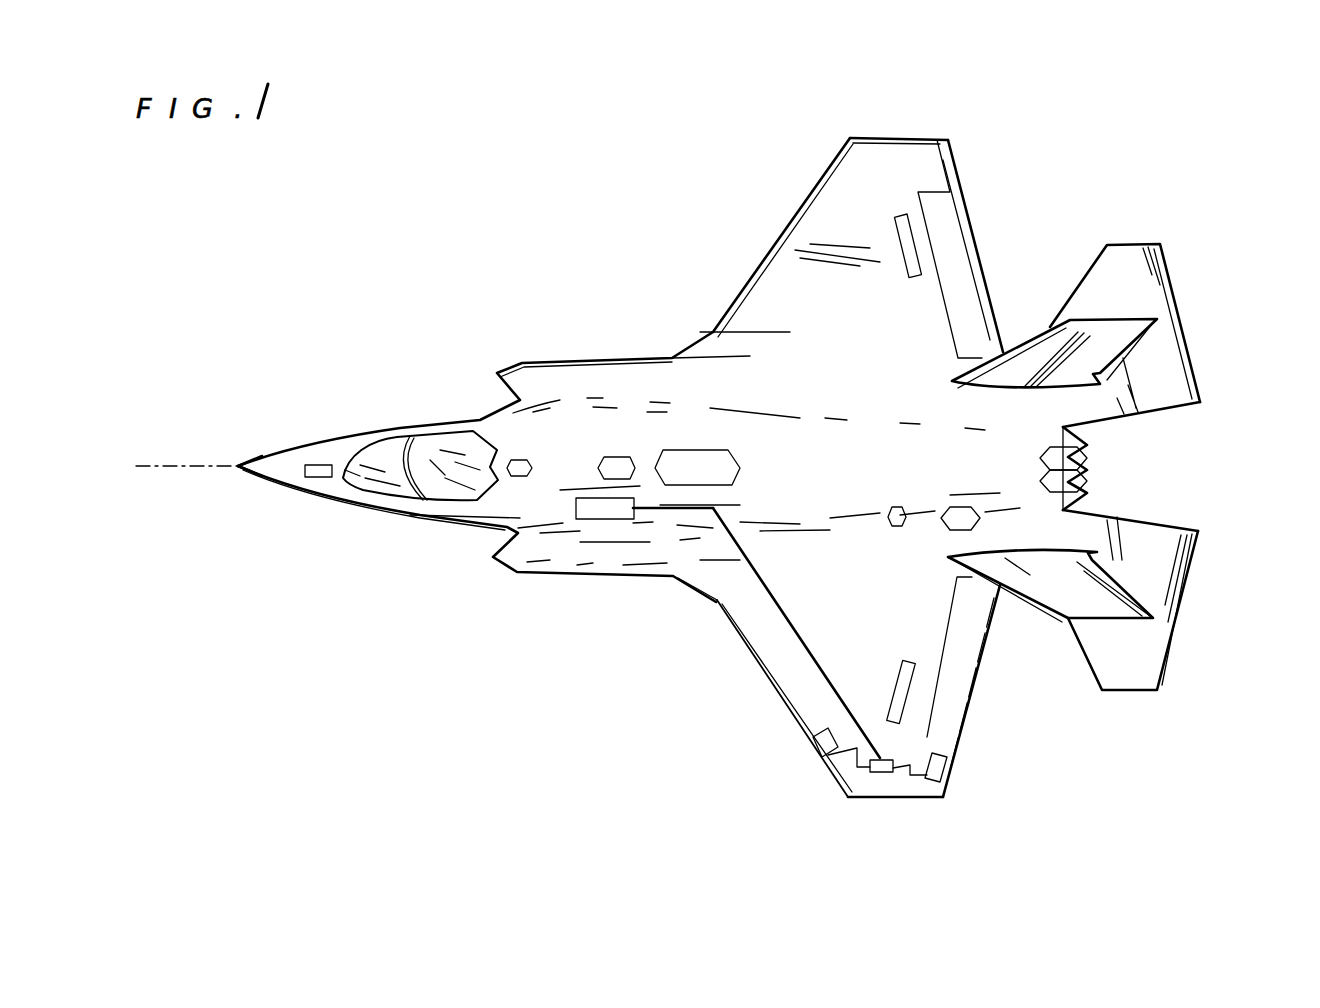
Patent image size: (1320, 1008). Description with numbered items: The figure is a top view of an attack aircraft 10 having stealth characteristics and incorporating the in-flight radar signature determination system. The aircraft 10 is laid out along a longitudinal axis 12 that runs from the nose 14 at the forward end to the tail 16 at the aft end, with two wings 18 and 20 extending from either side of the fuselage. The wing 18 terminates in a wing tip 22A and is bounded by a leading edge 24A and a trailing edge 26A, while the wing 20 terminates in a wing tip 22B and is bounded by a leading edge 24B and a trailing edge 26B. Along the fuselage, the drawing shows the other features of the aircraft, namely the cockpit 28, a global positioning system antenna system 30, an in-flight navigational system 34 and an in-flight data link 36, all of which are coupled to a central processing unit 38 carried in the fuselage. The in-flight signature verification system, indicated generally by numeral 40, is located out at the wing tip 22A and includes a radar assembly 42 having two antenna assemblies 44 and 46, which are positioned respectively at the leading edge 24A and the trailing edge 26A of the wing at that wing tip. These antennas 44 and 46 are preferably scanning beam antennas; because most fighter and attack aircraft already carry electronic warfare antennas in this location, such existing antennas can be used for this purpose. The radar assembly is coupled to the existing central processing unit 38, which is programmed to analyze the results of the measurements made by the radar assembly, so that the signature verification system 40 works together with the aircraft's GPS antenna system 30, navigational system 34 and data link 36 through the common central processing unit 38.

The aircraft 10 is at (1177, 162).
The longitudinal axis 12 is at (165, 466).
The nose 14 is at (238, 468).
The tail 16 is at (1087, 445).
The wing 18 is at (857, 696).
The wing 20 is at (890, 215).
The wing tip 22A is at (943, 800).
The wing tip 22B is at (890, 138).
The leading edge 24A is at (738, 638).
The leading edge 24B is at (815, 185).
The trailing edge 26A is at (970, 700).
The trailing edge 26B is at (968, 205).
The cockpit 28 is at (405, 435).
The global positioning system (GPS) antenna system 30 is at (521, 456).
The in-flight navigational system (INS) 34 is at (323, 480).
The in flight data link (IFDL) 36 is at (623, 455).
The central processing unit (CPU) 38 is at (615, 524).
The in flight signature verification system 40 is at (843, 806).
The radar assembly 42 is at (887, 803).
The antenna assembly 44 is at (813, 742).
The antenna assembly 46 is at (947, 767).